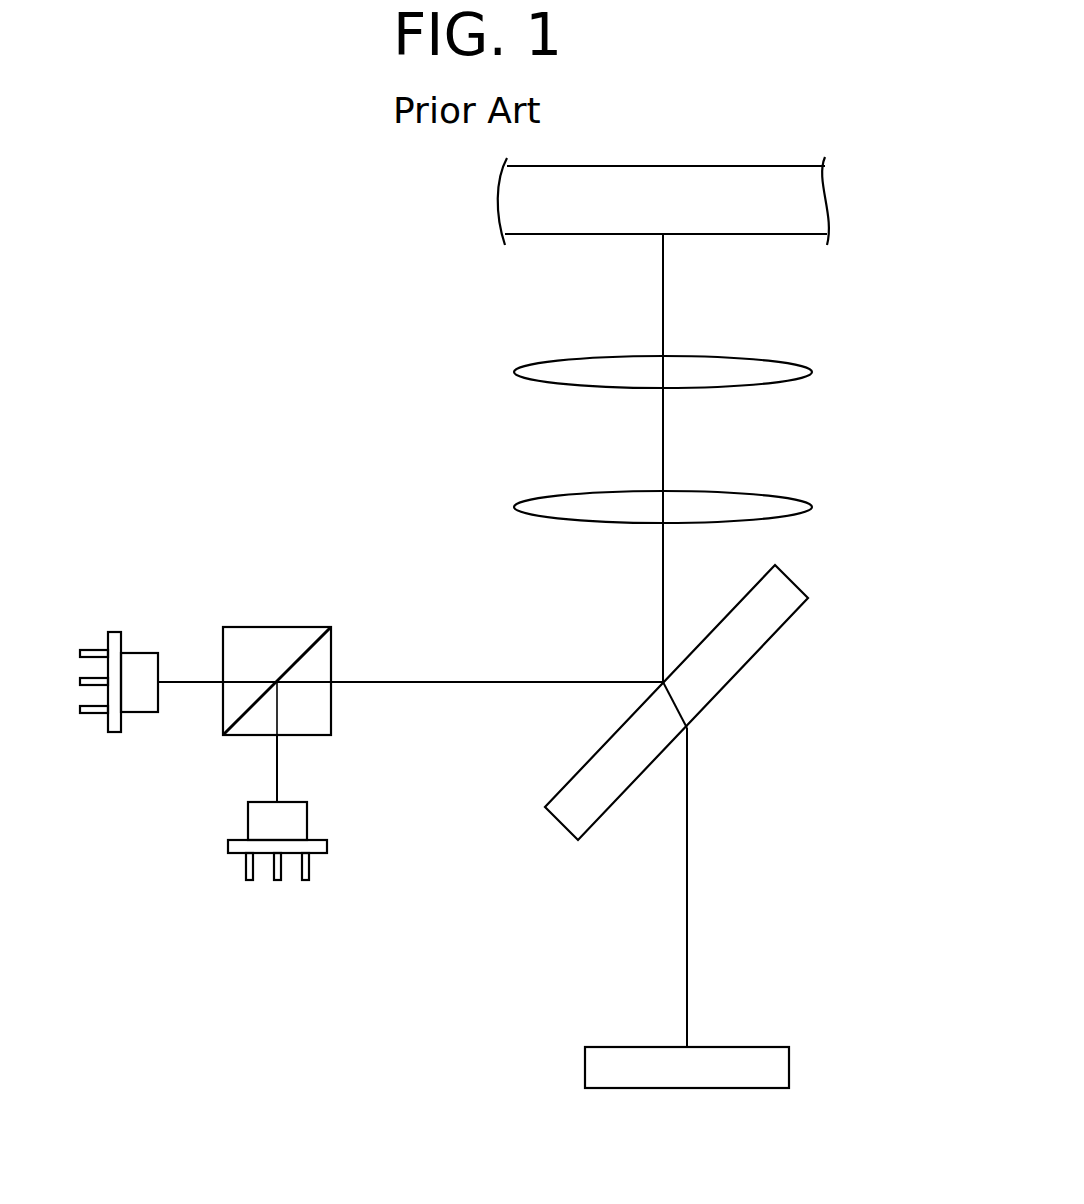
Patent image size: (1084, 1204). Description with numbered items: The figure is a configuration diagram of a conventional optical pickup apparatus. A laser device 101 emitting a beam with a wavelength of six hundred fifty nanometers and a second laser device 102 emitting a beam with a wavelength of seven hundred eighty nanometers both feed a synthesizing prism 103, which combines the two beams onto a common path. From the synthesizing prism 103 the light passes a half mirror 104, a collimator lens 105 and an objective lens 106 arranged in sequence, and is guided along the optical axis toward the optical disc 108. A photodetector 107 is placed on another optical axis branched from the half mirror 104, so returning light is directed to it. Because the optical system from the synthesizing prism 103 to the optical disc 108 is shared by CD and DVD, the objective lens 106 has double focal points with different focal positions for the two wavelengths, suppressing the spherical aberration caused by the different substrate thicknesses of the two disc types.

The laser device 101 is at (135, 652).
The laser device 102 is at (307, 818).
The synthesizing prism 103 is at (300, 627).
The half mirror 104 is at (773, 640).
The collimator lens 105 is at (785, 495).
The objective lens 106 is at (785, 362).
The photodetector 107 is at (789, 1065).
The optical disc 108 is at (802, 210).